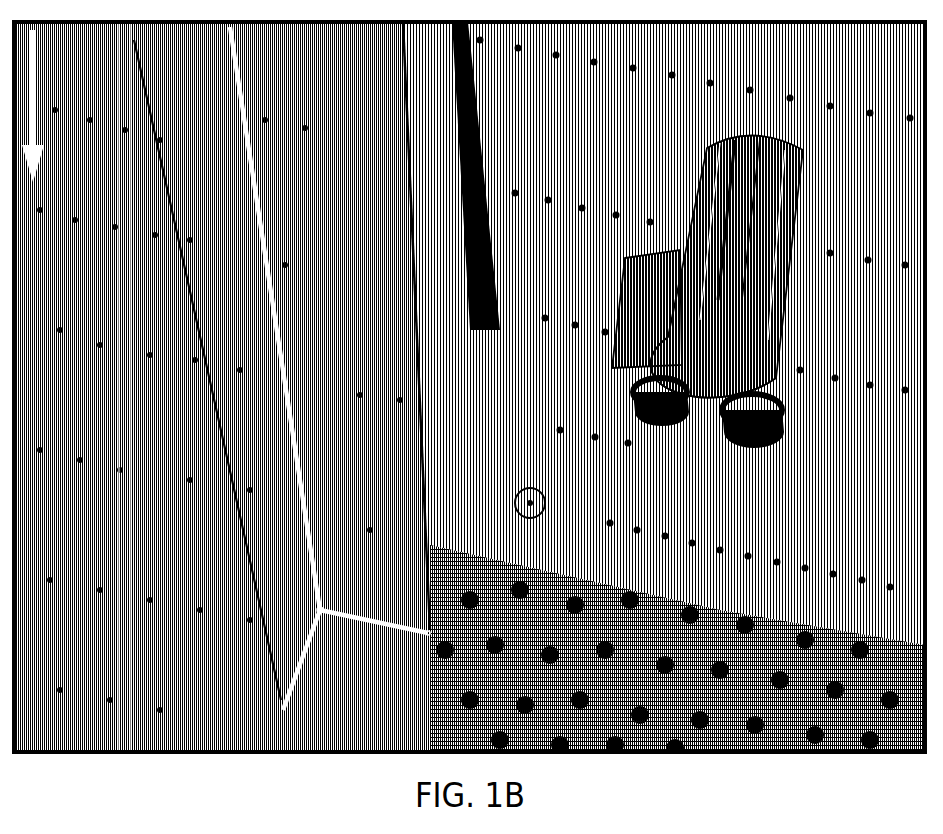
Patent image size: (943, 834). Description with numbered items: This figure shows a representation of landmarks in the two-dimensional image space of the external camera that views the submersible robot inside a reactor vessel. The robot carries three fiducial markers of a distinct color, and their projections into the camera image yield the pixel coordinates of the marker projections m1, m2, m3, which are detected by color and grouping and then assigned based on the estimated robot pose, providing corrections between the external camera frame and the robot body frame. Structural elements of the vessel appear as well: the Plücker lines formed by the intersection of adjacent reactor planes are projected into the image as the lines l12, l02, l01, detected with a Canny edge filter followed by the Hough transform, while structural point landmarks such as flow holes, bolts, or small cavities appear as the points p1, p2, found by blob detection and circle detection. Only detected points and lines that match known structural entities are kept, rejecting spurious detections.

The fiducial marker projection m1 is at (730, 260).
The fiducial marker projection m2 is at (740, 374).
The fiducial marker projection m3 is at (617, 309).
The projected line l12 is at (298, 318).
The projected line l02 is at (374, 601).
The projected line l01 is at (271, 673).
The structural point landmark p1 is at (375, 653).
The structural point landmark p2 is at (556, 510).